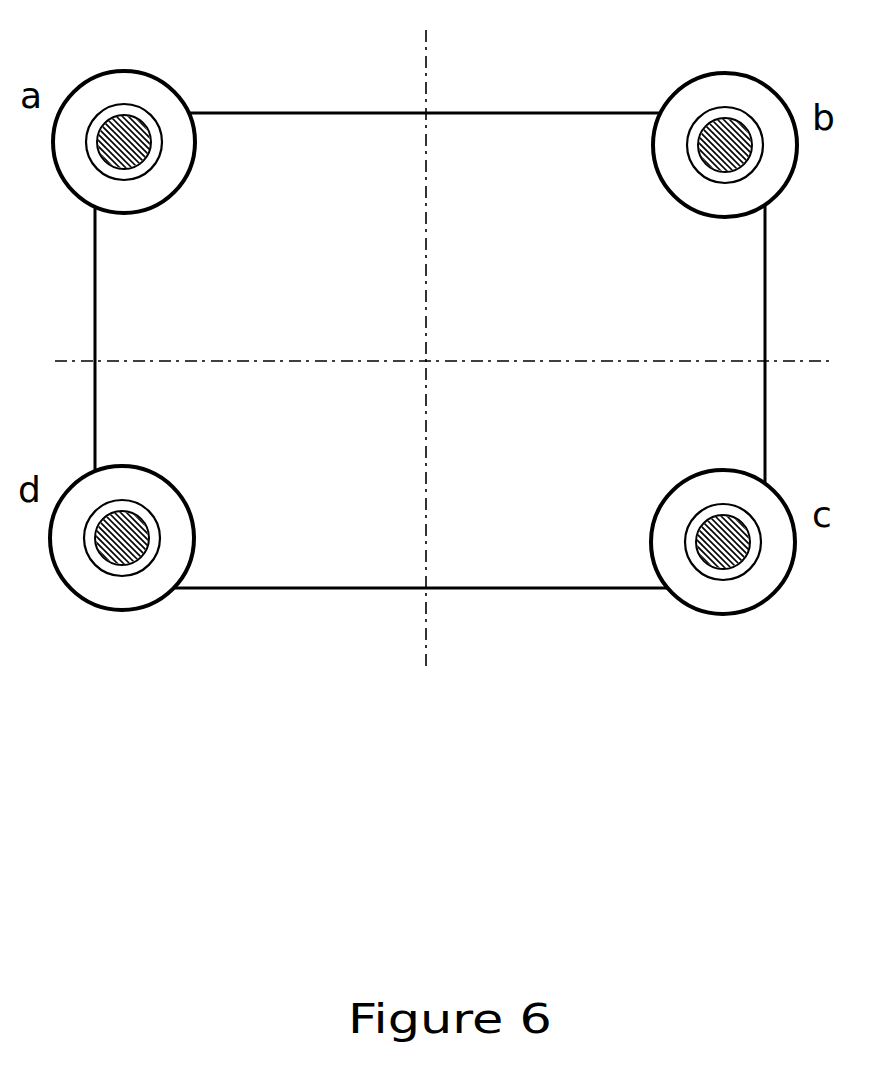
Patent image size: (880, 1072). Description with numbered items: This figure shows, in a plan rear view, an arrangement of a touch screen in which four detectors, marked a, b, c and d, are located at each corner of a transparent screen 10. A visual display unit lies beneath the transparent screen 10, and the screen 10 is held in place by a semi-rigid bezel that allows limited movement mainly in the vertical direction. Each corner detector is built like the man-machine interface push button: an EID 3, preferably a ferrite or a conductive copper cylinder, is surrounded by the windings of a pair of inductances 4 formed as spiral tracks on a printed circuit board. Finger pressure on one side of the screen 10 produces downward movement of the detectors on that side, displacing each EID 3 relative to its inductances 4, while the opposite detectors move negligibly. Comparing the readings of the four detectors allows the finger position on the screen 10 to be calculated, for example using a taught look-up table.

The EID 3 is at (123, 545).
The inductances 4 is at (62, 543).
The transparent screen 10 is at (329, 547).